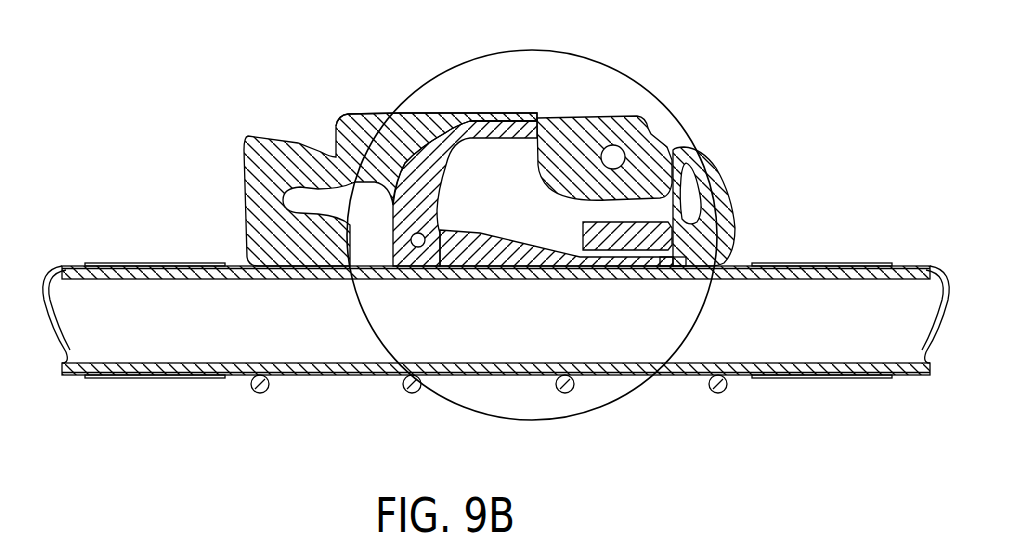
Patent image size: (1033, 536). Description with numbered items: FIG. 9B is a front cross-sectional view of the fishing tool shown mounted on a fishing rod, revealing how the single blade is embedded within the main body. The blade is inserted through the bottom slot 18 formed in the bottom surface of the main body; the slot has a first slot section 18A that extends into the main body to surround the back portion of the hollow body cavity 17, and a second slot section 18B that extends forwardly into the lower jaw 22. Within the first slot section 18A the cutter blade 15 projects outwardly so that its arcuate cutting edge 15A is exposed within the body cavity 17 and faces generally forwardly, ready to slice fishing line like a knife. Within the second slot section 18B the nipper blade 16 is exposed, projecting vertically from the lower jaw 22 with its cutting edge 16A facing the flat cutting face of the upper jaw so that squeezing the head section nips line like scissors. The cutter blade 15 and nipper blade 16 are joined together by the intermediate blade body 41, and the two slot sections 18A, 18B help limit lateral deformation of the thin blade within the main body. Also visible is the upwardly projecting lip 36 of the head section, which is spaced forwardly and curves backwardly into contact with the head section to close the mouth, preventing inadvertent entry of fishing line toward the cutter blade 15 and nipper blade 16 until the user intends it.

The cutter blade 15 is at (354, 248).
The cutting edge 15A is at (413, 247).
The nipper blade 16 is at (636, 233).
The cutting edge of the nipper blade 16A is at (665, 220).
The hollow body cavity 17 is at (537, 122).
The bottom slot 18 is at (372, 252).
The first slot section 18A is at (408, 157).
The second slot section 18B is at (618, 262).
The lower jaw 22 is at (673, 235).
The lip 36 is at (712, 197).
The intermediate blade body 41 is at (388, 262).